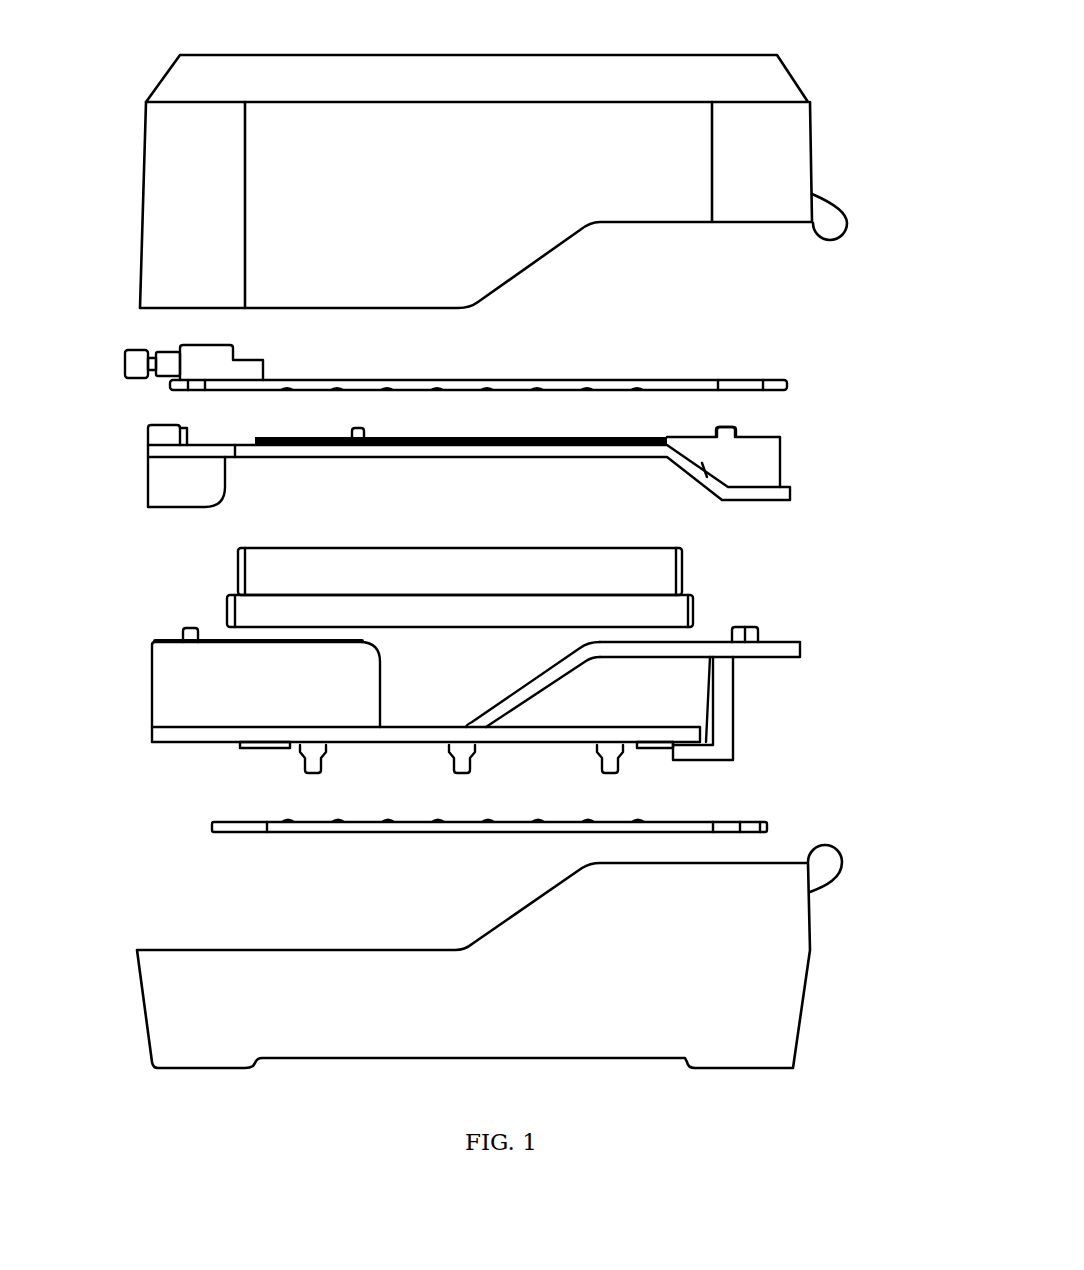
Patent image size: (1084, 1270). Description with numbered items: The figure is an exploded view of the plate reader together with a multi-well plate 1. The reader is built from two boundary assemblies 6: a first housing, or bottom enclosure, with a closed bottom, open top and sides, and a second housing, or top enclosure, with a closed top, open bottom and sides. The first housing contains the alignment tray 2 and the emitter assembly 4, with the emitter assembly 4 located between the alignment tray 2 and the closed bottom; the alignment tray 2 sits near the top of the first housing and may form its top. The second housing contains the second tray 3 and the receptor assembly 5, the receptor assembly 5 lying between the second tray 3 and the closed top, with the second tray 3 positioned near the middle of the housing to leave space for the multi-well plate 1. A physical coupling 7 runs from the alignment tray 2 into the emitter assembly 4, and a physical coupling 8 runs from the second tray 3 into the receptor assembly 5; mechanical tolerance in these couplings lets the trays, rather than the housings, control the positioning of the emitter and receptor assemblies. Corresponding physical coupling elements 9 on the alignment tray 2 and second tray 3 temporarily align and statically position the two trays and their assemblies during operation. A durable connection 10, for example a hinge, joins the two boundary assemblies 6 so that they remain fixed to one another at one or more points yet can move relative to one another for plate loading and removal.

The multi-well plate 1 is at (693, 575).
The alignment tray 2 is at (748, 700).
The second tray 3 is at (798, 492).
The emitter assembly 4 is at (780, 825).
The receptor assembly 5 is at (795, 387).
The boundary assembly 6 is at (822, 165).
The physical coupling 7 is at (603, 779).
The physical coupling 8 is at (702, 421).
The physical coupling 9 is at (165, 632).
The durable connection 10 is at (857, 227).